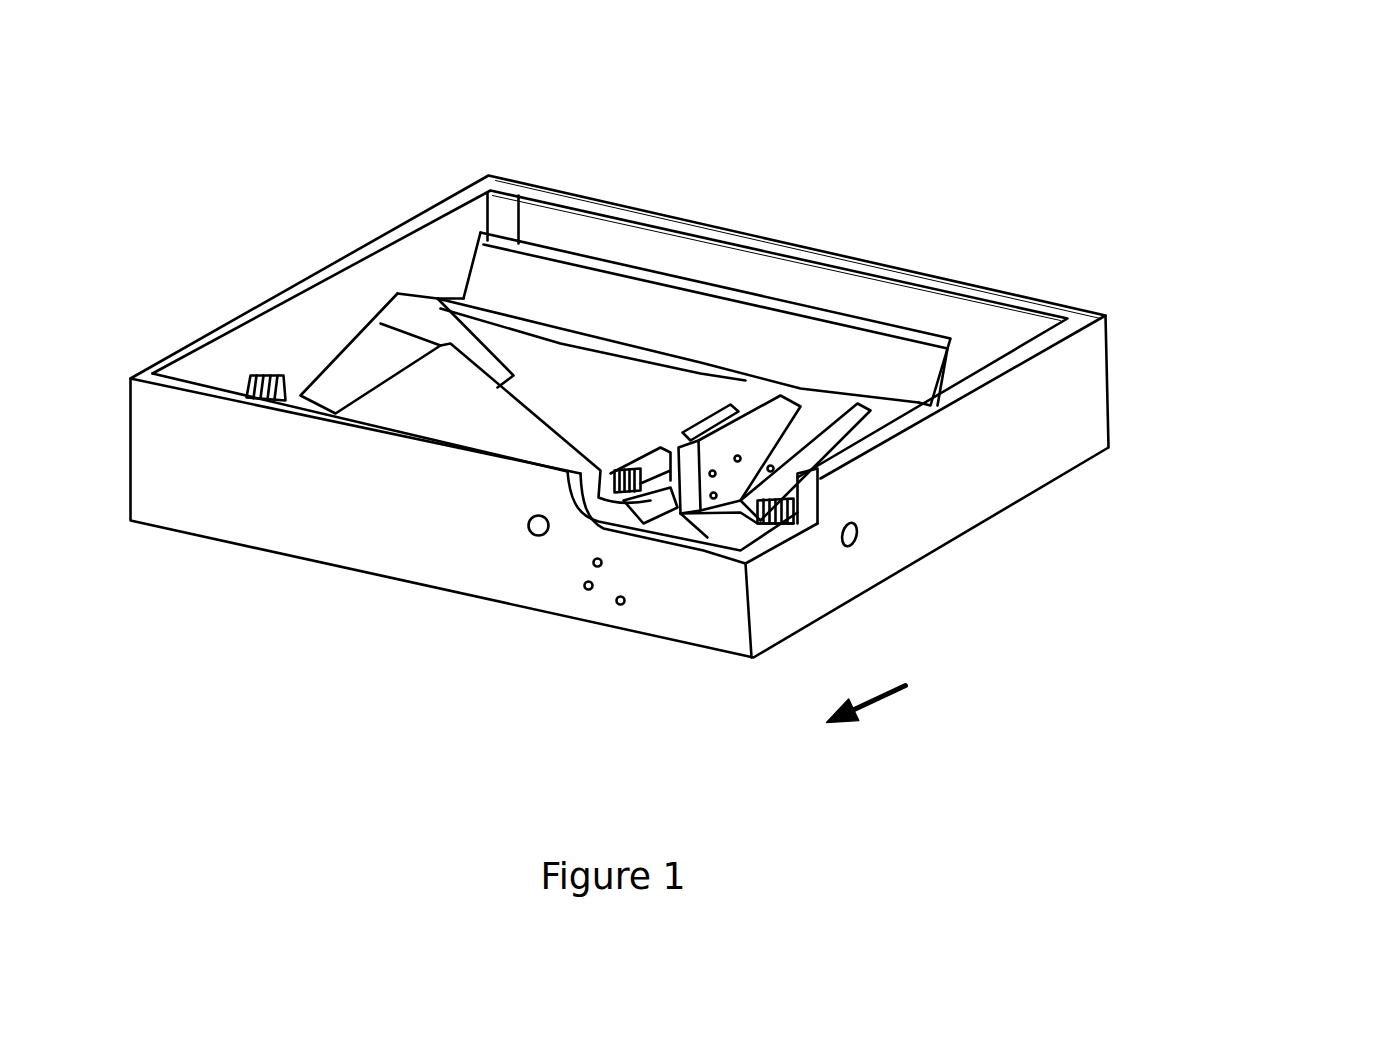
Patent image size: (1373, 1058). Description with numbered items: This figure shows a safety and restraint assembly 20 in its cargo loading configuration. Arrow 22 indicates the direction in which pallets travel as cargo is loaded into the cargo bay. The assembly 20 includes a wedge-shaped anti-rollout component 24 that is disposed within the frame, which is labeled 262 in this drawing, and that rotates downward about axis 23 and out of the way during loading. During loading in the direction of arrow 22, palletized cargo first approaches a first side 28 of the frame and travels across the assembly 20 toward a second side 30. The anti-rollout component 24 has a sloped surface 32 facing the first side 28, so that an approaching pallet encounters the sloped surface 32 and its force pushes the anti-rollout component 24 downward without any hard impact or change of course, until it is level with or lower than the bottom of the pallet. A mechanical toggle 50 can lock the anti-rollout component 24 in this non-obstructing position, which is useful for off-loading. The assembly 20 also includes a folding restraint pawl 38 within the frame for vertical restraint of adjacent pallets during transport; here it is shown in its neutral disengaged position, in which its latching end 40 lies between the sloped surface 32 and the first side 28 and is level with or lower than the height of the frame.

The safety and restraint assembly 20 is at (1330, 143).
The arrow 22 is at (1195, 518).
The axis 23 is at (534, 534).
The anti-rollout component 24 is at (398, 414).
The first side 28 is at (615, 205).
The second side 30 is at (200, 486).
The sloped surface 32 is at (447, 272).
The folding restraint pawl 38 is at (842, 333).
The latching end 40 is at (540, 268).
The mechanical toggle 50 is at (671, 547).
The housing rim edge 262 is at (293, 283).